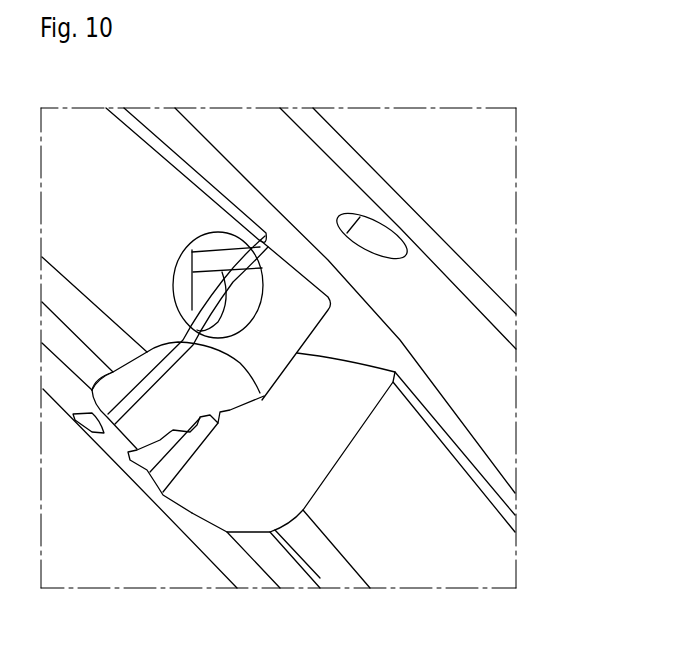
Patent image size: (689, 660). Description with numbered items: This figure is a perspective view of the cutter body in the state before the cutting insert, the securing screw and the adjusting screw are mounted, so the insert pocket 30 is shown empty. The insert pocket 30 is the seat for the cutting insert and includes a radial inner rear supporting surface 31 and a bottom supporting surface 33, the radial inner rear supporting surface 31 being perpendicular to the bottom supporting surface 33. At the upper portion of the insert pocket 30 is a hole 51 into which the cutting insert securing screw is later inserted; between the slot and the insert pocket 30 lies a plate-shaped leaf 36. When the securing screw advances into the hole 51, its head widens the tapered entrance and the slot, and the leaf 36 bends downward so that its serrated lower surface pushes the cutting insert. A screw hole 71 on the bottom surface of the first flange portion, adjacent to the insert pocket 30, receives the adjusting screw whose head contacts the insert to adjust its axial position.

The insert pocket 30 is at (345, 342).
The radial inner rear supporting surface 31 is at (158, 472).
The bottom supporting surface 33 is at (235, 505).
The plate-shaped leaf 36 is at (287, 302).
The hole 51 is at (222, 253).
The screw hole 71 is at (377, 240).